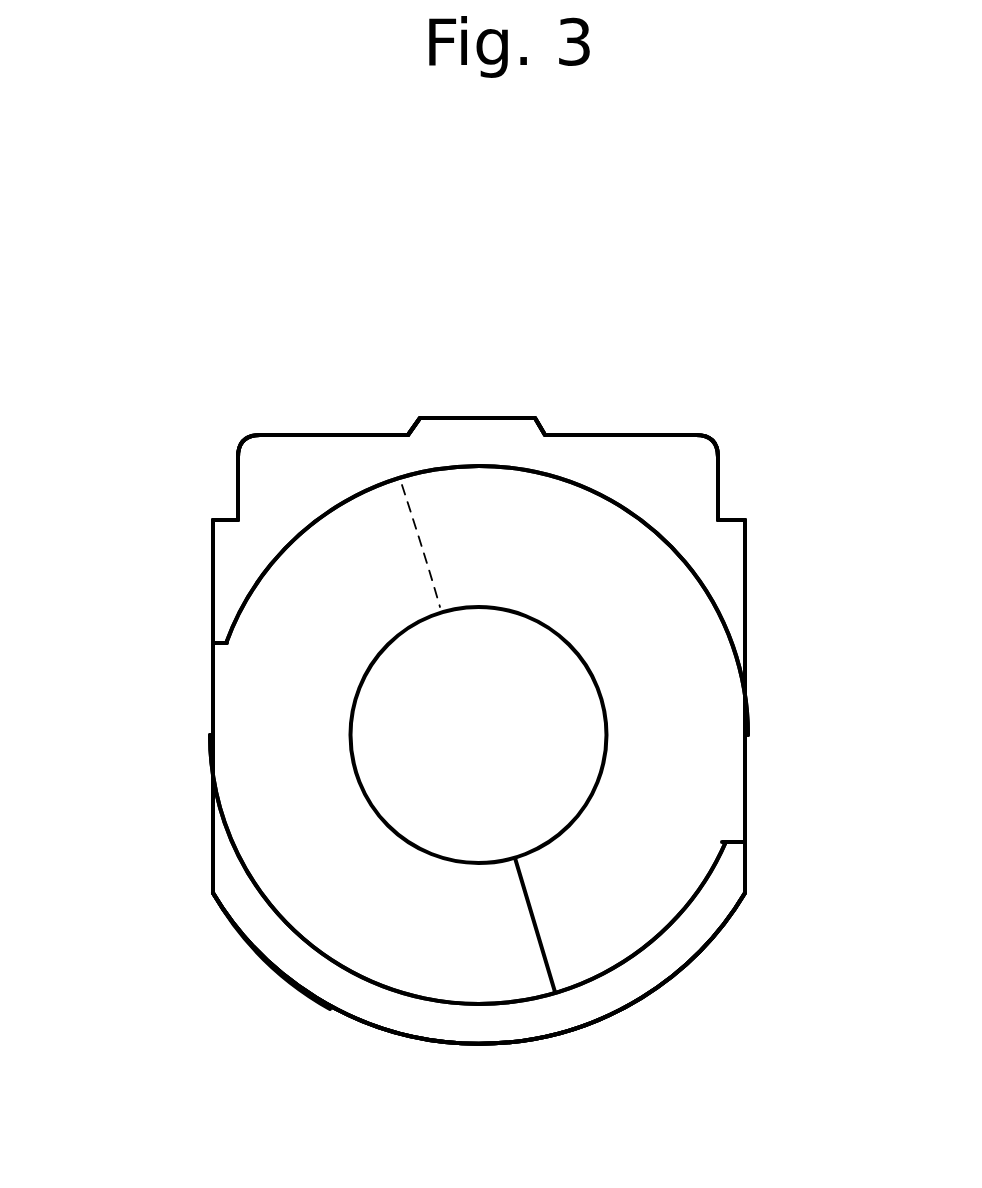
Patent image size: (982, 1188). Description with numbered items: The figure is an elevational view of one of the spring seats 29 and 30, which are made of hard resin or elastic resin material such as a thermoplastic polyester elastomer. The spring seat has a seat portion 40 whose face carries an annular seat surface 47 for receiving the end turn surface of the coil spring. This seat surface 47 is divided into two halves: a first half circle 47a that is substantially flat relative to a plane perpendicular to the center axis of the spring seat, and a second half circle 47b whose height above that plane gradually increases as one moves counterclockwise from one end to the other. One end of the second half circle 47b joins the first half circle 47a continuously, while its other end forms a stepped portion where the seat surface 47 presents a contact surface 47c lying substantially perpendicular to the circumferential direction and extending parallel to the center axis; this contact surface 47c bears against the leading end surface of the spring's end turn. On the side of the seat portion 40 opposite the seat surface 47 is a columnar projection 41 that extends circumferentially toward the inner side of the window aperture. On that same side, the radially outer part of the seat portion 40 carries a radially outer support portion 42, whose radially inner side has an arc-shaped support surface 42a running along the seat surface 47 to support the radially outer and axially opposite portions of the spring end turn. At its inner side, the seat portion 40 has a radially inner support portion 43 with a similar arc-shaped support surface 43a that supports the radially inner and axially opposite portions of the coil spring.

The spring seat 29 is at (643, 392).
The spring seat 30 is at (479, 731).
The seat portion 40 is at (752, 716).
The projection 41 is at (432, 665).
The radially outer support portion 42 is at (372, 460).
The support surface 42a is at (358, 494).
The radially inner support portion 43 is at (452, 1032).
The support surface 43a is at (314, 945).
The seat surface 47 is at (497, 527).
The first half circle 47a is at (648, 592).
The second half circle 47b is at (272, 692).
The contact surface 47c is at (545, 947).